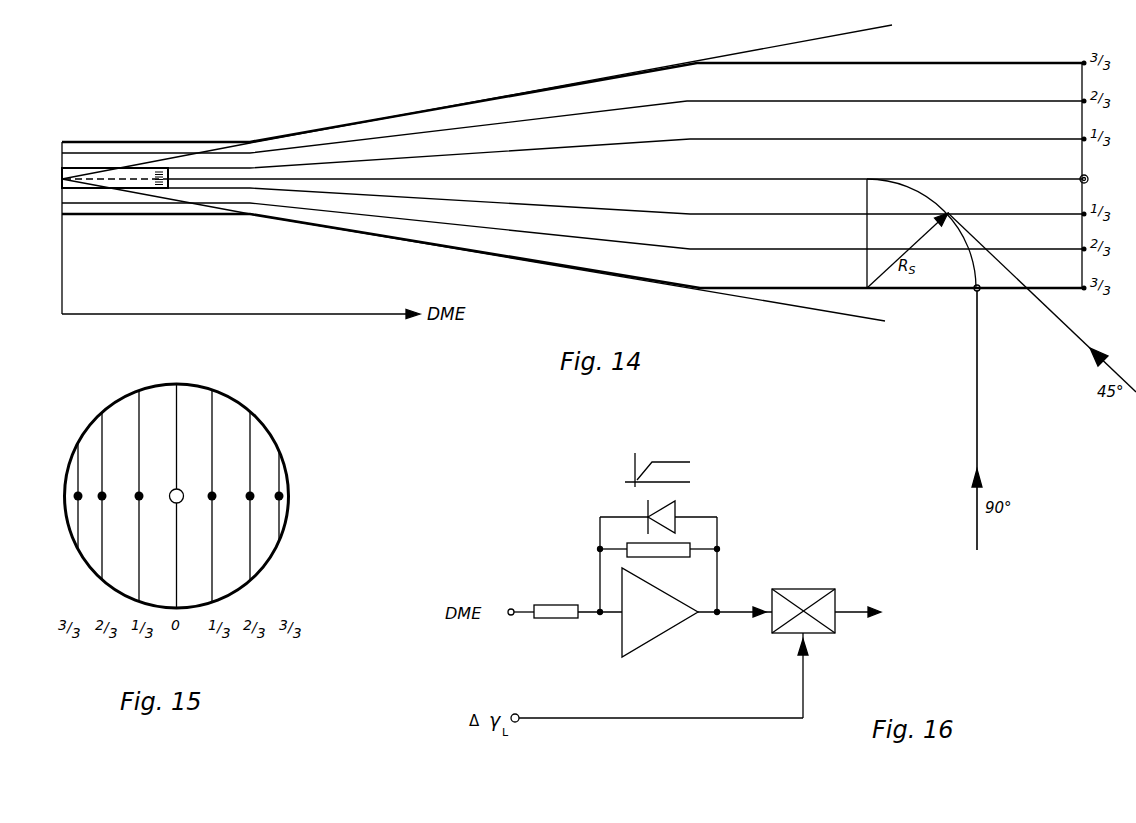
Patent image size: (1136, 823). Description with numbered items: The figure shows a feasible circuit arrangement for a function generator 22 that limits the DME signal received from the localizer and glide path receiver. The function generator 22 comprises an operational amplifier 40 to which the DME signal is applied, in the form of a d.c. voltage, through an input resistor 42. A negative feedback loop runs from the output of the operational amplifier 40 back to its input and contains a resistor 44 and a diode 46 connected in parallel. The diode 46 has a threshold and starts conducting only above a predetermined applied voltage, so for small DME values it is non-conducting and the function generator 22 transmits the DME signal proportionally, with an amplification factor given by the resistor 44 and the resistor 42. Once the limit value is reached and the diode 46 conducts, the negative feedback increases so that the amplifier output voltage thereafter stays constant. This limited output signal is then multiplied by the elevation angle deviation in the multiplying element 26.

The function generator 22 is at (734, 563).
The multiplying element 26 is at (812, 597).
The operational amplifier 40 is at (660, 612).
The resistor 42 is at (550, 609).
The resistor 44 is at (673, 552).
The diode 46 is at (670, 512).